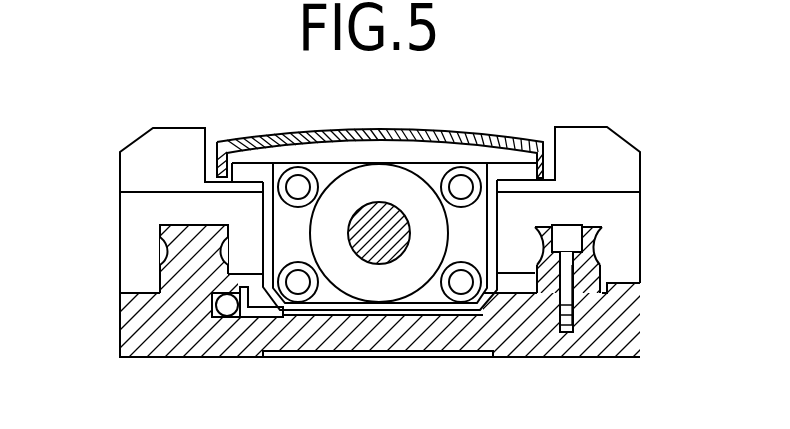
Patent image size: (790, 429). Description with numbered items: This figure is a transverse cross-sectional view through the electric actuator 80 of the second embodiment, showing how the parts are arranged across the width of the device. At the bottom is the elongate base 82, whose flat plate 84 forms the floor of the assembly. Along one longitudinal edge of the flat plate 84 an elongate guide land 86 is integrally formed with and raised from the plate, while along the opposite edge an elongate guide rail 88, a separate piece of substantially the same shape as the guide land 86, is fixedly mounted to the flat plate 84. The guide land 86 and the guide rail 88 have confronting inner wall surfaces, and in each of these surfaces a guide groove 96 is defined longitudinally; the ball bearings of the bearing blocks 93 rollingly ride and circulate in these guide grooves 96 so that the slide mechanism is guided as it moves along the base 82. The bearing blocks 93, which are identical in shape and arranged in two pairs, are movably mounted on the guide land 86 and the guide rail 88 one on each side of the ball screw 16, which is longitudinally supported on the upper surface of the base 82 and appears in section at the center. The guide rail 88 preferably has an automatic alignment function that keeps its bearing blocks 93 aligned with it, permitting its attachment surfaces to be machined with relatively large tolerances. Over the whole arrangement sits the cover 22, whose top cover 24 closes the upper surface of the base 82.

The ball screw 16 is at (388, 222).
The cover 22 is at (462, 123).
The top cover 24 is at (372, 127).
The electric actuator 80 is at (549, 103).
The elongate base 82 is at (312, 352).
The flat plate 84 is at (398, 344).
The guide land 86 is at (186, 235).
The guide rail 88 is at (600, 272).
The bearing blocks 93 is at (148, 219).
The guide grooves 96 is at (228, 252).